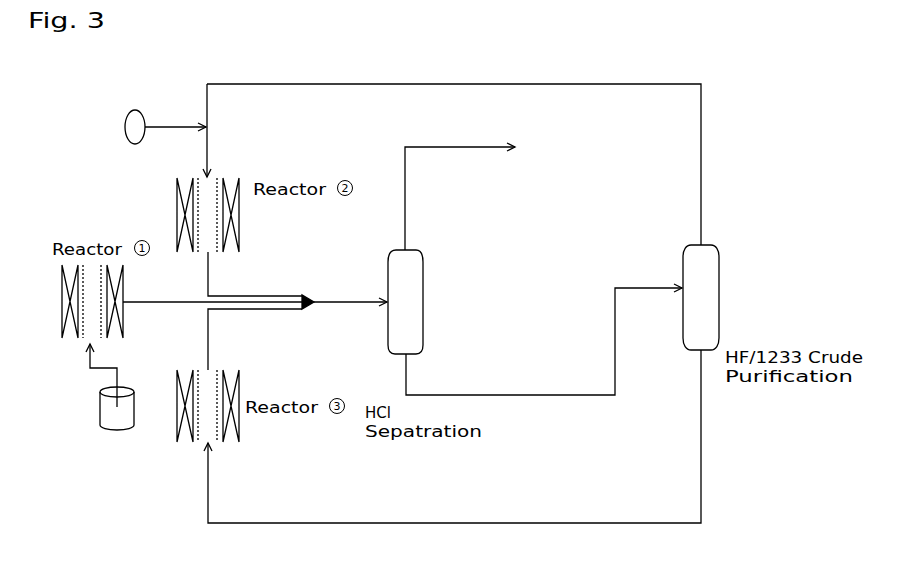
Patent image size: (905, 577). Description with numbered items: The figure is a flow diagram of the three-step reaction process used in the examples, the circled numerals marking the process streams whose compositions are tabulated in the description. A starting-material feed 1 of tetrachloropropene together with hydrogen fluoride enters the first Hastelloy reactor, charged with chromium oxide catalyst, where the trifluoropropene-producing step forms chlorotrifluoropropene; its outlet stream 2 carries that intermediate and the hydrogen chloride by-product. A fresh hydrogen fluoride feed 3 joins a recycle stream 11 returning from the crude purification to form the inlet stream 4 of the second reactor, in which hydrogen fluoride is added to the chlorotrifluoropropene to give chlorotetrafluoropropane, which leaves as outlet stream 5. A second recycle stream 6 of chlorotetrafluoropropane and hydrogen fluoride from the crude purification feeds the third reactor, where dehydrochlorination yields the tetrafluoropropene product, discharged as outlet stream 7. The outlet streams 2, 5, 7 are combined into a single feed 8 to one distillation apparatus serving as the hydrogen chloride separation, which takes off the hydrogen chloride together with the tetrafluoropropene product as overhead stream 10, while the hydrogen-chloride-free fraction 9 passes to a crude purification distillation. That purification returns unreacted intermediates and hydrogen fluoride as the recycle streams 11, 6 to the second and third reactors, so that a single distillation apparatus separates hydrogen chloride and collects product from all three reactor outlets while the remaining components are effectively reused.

The starting material feed stream 1 is at (111, 387).
The reactor 1 outlet stream 2 is at (212, 290).
The hydrogen fluoride feed stream 3 is at (165, 123).
The reactor 2 inlet stream 4 is at (219, 130).
The reactor 2 outlet stream 5 is at (255, 274).
The recycle stream to reactor 3 6 is at (452, 452).
The reactor 3 outlet stream 7 is at (255, 339).
The combined distillation feed stream 8 is at (344, 292).
The hydrogen chloride-free fraction 9 is at (544, 354).
The hydrogen chloride overhead stream 10 is at (460, 188).
The recycle stream to reactor 2 11 is at (454, 152).